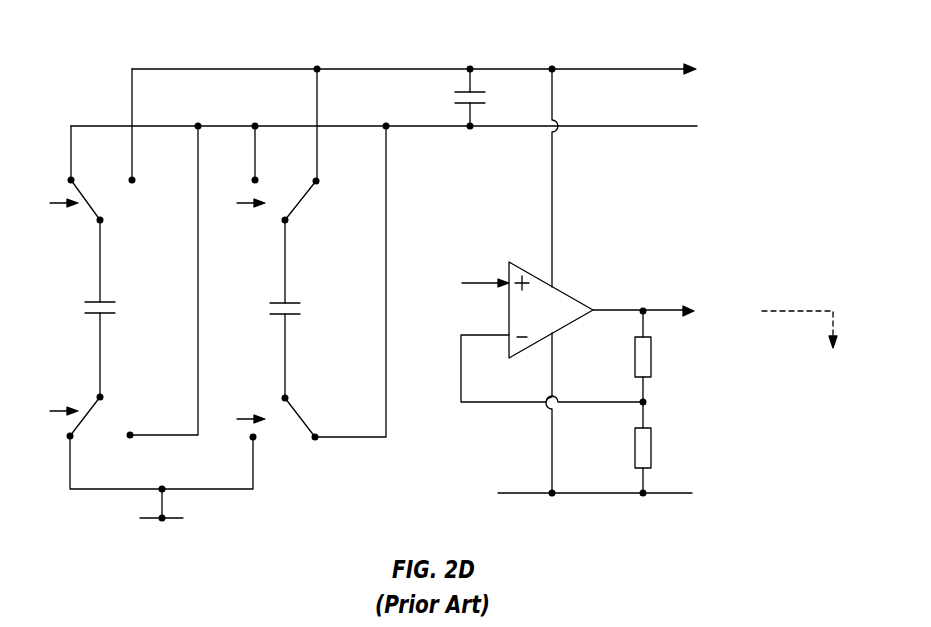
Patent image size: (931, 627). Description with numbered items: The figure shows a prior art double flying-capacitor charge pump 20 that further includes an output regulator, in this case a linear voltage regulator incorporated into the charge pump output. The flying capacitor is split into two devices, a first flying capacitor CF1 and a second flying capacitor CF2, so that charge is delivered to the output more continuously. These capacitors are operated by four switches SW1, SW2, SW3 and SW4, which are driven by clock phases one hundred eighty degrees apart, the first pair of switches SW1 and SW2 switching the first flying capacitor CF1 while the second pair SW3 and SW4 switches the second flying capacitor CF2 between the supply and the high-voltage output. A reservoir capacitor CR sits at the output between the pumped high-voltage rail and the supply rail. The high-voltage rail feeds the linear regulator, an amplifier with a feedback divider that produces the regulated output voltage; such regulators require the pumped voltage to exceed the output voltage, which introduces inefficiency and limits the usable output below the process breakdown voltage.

The prior art high-voltage charge pump regulator circuit 20 is at (119, 35).
The switch SW1 is at (112, 200).
The switch SW2 is at (112, 412).
The switch SW3 is at (302, 200).
The switch SW4 is at (317, 418).
The flying capacitor CF1 is at (125, 309).
The flying capacitor CF2 is at (310, 309).
The reservoir capacitor CR is at (489, 103).